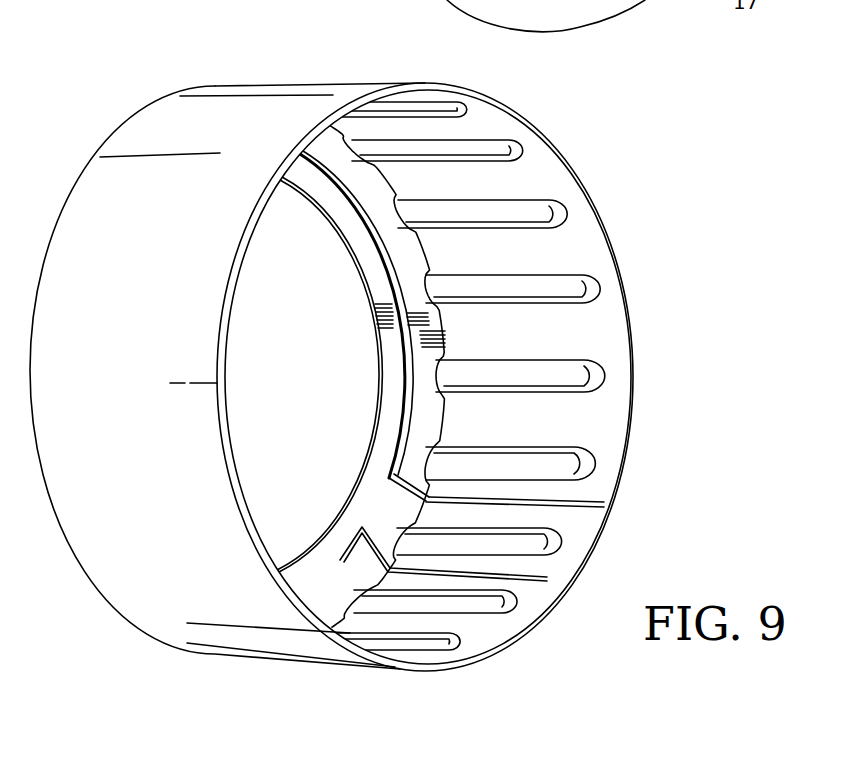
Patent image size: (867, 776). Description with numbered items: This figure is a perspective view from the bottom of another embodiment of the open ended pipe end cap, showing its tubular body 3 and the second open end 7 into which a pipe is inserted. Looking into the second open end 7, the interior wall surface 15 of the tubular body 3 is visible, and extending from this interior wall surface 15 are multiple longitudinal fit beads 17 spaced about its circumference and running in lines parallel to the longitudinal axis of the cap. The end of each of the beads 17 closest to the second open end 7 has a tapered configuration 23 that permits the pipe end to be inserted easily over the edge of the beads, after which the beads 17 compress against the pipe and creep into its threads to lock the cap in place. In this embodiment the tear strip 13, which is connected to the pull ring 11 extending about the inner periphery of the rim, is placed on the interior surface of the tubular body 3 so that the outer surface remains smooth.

The tubular body 3 is at (268, 85).
The second open end 7 is at (607, 420).
The pull ring 11 is at (392, 355).
The tear strip 13 is at (538, 521).
The interior wall surface 15 is at (582, 143).
The longitudinal fit beads 17 is at (527, 375).
The tapered configuration 23 is at (583, 292).